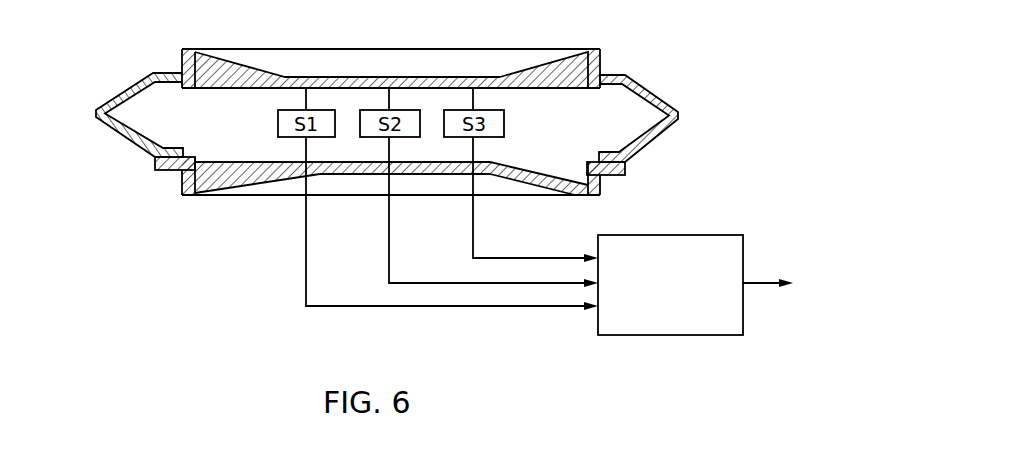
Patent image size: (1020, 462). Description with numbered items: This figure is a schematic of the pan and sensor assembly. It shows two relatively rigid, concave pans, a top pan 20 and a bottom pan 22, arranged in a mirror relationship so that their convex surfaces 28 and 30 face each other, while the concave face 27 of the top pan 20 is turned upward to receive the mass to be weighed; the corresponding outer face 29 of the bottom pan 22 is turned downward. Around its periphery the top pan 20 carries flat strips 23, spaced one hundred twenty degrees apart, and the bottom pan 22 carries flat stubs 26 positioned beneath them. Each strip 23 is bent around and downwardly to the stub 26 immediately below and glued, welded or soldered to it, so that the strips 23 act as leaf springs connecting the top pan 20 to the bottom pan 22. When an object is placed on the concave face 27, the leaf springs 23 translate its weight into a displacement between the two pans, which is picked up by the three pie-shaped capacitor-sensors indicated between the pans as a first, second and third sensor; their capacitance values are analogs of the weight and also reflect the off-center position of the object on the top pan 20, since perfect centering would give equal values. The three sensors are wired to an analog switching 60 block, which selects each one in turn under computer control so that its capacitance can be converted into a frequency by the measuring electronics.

The top pan 20 is at (241, 60).
The bottom pan 22 is at (520, 182).
The strips 23 is at (141, 77).
The stubs 26 is at (158, 171).
The concave face 27 is at (423, 76).
The convex surface 28 is at (500, 90).
The lower liner tapered end portion 29 is at (287, 180).
The convex surface 30 is at (497, 162).
The analog switching 60 is at (722, 242).